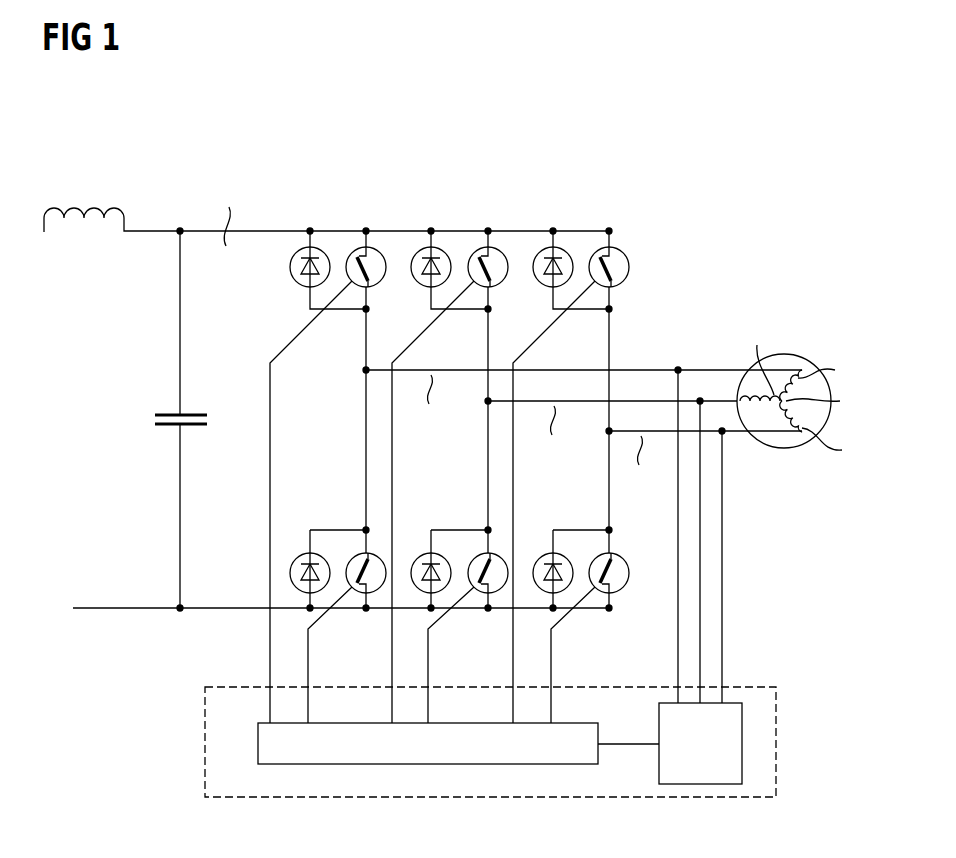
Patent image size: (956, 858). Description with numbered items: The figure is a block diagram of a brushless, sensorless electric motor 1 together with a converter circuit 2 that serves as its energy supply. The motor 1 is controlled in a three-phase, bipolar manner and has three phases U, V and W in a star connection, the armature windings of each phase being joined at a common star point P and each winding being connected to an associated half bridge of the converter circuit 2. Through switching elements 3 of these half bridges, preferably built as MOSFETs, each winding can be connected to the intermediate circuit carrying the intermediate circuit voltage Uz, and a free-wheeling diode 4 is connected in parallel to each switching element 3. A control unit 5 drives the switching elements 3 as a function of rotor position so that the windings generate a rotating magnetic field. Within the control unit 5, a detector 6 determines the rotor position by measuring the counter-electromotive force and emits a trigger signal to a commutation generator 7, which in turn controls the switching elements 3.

The electric motor 1 is at (749, 270).
The converter circuit 2 is at (328, 126).
The switching element 3 is at (343, 246).
The free-wheeling diode 4 is at (288, 246).
The control unit 5 is at (776, 742).
The detector 6 is at (670, 743).
The commutation generator 7 is at (428, 765).